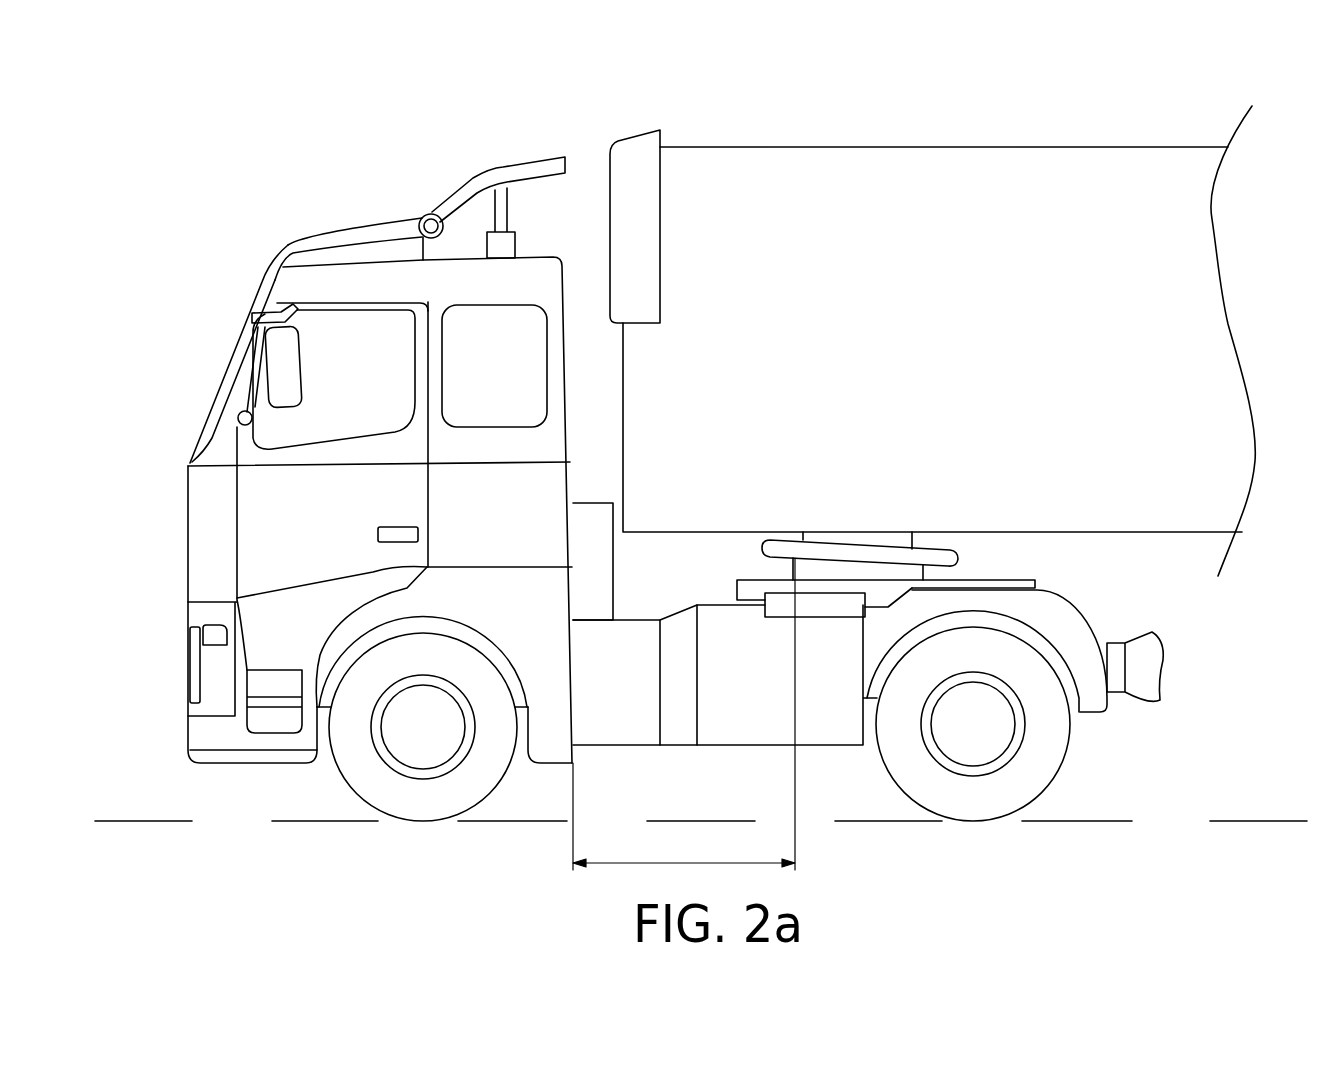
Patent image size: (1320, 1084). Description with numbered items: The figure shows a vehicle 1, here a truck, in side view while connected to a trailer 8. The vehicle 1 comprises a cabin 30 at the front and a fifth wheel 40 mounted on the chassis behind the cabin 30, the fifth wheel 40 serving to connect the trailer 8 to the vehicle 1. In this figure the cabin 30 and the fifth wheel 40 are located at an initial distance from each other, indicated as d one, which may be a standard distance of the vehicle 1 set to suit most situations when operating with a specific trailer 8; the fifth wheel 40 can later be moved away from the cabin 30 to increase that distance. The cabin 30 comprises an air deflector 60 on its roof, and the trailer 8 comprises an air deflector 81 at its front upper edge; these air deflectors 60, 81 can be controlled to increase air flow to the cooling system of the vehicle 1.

The vehicle 1 is at (285, 225).
The cabin 30 is at (257, 290).
The air deflector 60 is at (417, 188).
The air deflector 81 is at (637, 173).
The trailer 8 is at (875, 142).
The fifth wheel 40 is at (853, 552).